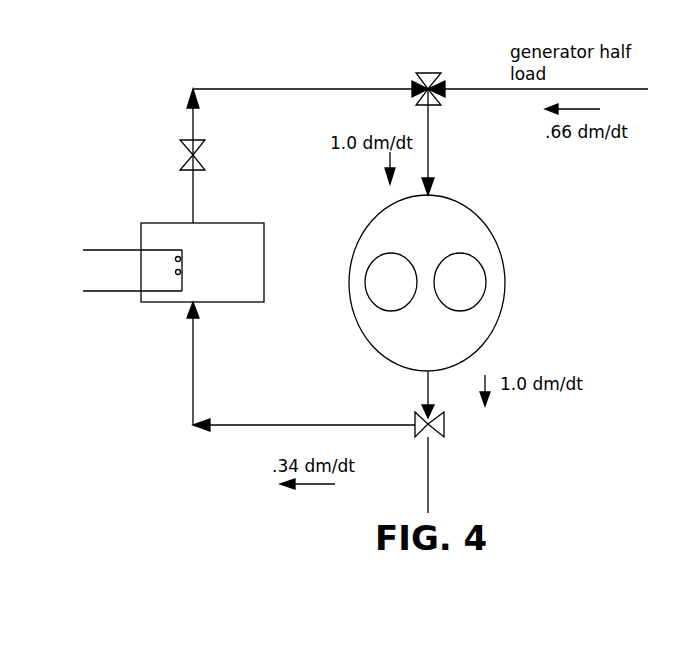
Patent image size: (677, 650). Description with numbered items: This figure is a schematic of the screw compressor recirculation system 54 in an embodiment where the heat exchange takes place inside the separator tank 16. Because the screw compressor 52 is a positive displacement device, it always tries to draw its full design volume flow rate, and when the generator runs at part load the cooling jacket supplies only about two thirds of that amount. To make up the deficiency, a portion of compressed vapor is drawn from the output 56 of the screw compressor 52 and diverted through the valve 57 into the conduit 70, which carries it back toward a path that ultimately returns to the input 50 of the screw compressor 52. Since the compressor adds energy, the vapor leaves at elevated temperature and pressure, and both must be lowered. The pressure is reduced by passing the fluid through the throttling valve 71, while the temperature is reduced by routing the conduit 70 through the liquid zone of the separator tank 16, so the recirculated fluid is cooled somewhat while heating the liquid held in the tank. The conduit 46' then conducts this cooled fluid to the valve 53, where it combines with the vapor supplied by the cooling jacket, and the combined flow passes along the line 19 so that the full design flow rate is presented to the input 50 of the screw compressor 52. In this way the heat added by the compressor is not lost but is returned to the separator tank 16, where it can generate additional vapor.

The separator tank 16 is at (155, 235).
The steam feed line to condenser 19 is at (430, 148).
The conduit 46' is at (417, 156).
The input of the screw compressor 50 is at (457, 203).
The screw compressor 52 is at (372, 238).
The valve 53 is at (425, 78).
The recirculation system 54 is at (166, 310).
The output of the screw compressor 56 is at (429, 375).
The valve 57 is at (445, 419).
The conduit 70 is at (343, 425).
The throttling valve 71 is at (184, 163).